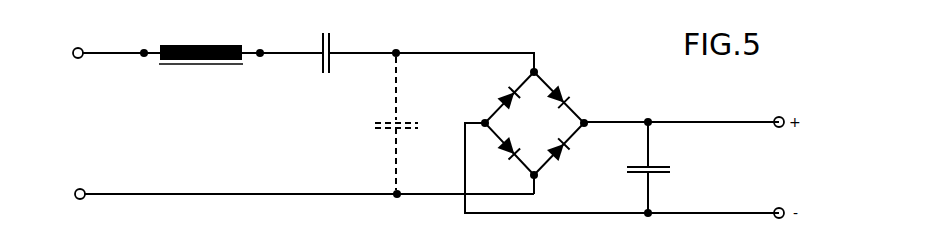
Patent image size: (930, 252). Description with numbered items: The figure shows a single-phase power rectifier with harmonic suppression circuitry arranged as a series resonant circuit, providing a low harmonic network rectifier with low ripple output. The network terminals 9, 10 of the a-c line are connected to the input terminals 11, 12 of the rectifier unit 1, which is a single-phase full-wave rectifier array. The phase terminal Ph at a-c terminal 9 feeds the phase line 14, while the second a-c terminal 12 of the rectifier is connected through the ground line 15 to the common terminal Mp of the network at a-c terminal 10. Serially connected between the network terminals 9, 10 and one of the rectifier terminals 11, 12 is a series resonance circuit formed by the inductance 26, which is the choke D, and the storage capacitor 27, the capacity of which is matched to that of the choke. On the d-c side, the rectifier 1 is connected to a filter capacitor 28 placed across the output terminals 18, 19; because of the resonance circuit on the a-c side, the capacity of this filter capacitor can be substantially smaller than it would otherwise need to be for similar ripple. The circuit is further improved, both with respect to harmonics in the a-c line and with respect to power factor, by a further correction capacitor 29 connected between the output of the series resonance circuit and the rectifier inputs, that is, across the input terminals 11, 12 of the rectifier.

The rectifier array 1 is at (581, 87).
The a-c terminal 9 is at (80, 46).
The a-c terminal 10 is at (86, 191).
The input terminal 11 is at (539, 70).
The input terminal 12 is at (540, 178).
The line 14 is at (121, 52).
The ground line 15 is at (244, 197).
The output terminal 18 is at (588, 119).
The output terminal 19 is at (482, 121).
The inductance D 26 is at (197, 45).
The storage capacitor C1 27 is at (336, 48).
The filter capacitor C2 28 is at (658, 167).
The correction capacitor C3 29 is at (395, 120).